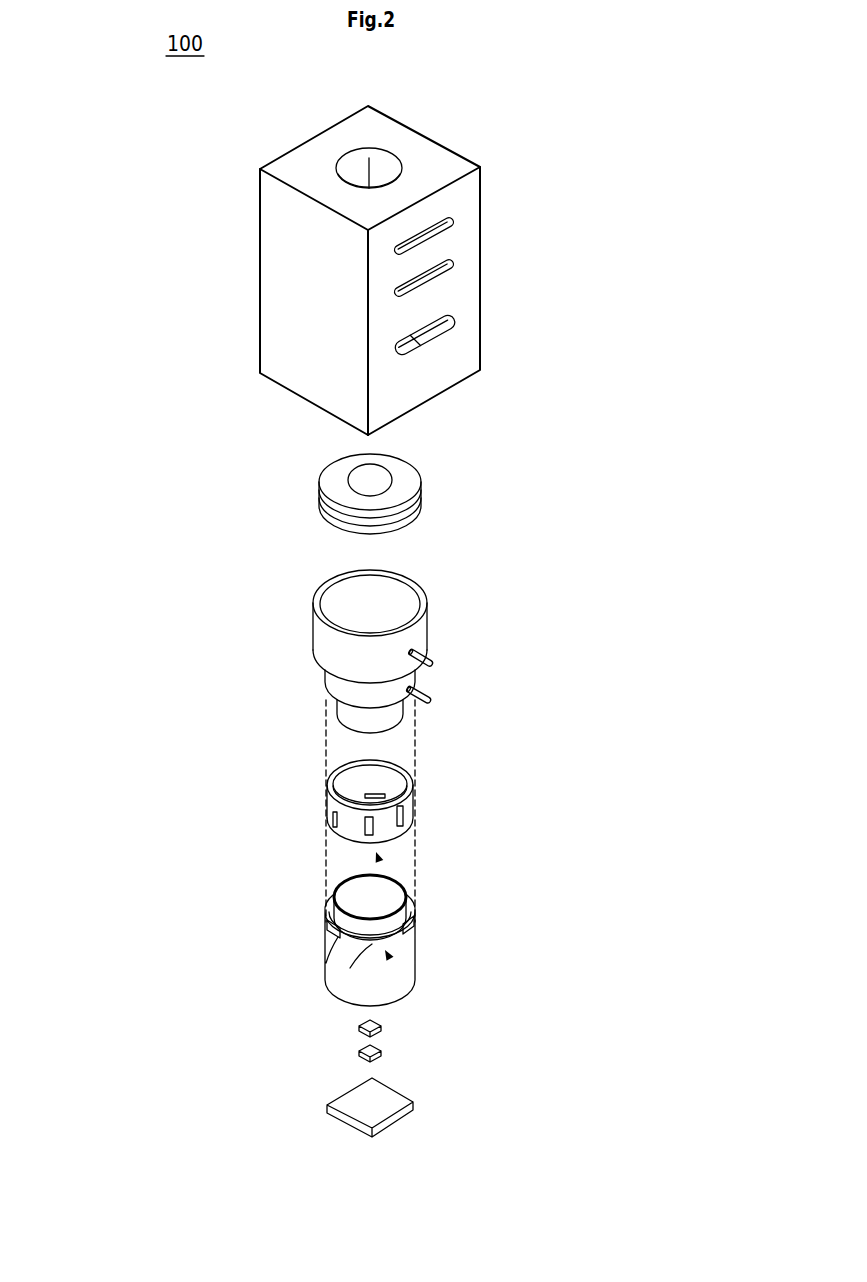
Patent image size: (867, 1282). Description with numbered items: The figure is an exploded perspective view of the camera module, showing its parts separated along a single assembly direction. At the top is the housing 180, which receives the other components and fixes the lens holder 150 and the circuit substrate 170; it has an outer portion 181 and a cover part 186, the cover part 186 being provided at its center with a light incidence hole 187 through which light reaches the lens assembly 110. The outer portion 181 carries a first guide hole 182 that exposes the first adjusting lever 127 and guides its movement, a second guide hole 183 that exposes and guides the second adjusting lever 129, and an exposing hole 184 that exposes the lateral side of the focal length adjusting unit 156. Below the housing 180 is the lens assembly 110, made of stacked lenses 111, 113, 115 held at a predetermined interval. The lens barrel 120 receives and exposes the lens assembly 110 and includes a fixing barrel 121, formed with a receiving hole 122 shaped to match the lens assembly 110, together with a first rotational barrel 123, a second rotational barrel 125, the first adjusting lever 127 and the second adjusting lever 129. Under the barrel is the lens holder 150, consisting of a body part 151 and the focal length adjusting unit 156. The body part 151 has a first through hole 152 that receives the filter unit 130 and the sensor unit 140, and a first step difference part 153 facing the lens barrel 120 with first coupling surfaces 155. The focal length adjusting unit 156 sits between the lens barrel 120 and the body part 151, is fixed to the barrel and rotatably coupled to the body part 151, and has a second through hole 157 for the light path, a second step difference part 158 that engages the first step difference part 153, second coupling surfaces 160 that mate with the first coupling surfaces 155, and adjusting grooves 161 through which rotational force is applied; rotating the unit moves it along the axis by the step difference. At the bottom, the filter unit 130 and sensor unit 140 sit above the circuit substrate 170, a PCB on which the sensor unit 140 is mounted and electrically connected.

The lens assembly 110 is at (417, 483).
The lens 111 is at (407, 521).
The lens 113 is at (418, 508).
The lens 115 is at (420, 492).
The lens barrel 120 is at (408, 649).
The fixing barrel 121 is at (318, 660).
The receiving hole 122 is at (391, 601).
The first rotational barrel 123 is at (318, 628).
The second rotational barrel 125 is at (335, 691).
The first adjusting lever 127 is at (437, 665).
The second adjusting lever 129 is at (437, 703).
The filter unit 130 is at (356, 1022).
The sensor unit 140 is at (356, 1047).
The lens holder 150 is at (433, 890).
The body part 151 is at (405, 968).
The first through hole 152 is at (391, 898).
The first step difference part 153 is at (389, 957).
The first coupling surface 155 is at (415, 925).
The focal length adjusting unit 156 is at (410, 812).
The second through hole 157 is at (391, 779).
The second step difference part 158 is at (379, 858).
The second coupling surface 160 is at (385, 838).
The adjusting groove 161 is at (330, 826).
The circuit substrate 170 is at (345, 1100).
The housing 180 is at (369, 248).
The outer portion 181 is at (272, 240).
The first guide hole 182 is at (440, 229).
The second guide hole 183 is at (440, 268).
The exposing hole 184 is at (440, 327).
The cover part 186 is at (288, 165).
The light incidence hole 187 is at (378, 166).